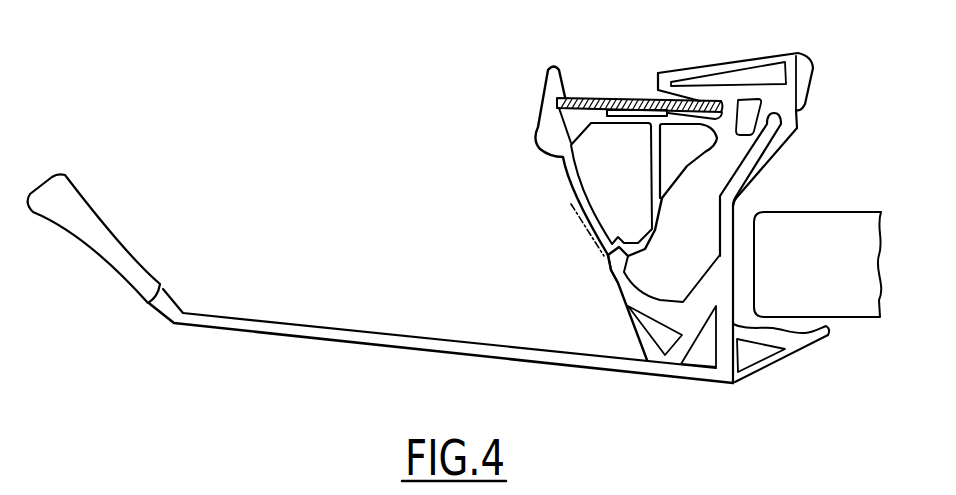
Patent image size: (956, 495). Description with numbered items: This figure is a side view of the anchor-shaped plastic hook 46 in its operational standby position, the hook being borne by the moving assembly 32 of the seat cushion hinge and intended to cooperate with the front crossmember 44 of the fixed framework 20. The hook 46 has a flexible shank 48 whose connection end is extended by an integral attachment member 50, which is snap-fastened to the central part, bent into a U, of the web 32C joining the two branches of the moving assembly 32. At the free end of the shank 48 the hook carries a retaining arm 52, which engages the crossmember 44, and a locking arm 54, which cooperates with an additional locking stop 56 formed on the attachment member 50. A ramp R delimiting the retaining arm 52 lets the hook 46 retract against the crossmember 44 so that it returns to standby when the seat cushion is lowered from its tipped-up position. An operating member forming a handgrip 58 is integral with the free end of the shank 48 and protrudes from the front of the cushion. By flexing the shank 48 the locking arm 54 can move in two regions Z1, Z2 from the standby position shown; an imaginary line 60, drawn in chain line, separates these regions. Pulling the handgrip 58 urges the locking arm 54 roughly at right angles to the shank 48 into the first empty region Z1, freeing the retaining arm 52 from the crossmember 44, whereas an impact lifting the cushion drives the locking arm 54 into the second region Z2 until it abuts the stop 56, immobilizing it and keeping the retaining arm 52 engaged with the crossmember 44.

The framework 20 is at (852, 210).
The moving assembly 32 is at (582, 98).
The web 32C is at (614, 97).
The front crossmember 44 is at (862, 318).
The hook 46 is at (766, 180).
The flexible shank 48 is at (719, 224).
The attachment member 50 is at (566, 162).
The retaining arm 52 is at (803, 351).
The locking arm 54 is at (617, 290).
The locking stop 56 is at (610, 258).
The handgrip 58 is at (180, 325).
The imaginary line 60 is at (573, 206).
The ramp R is at (785, 362).
The first empty region Z1 is at (599, 282).
The second region Z2 is at (671, 279).